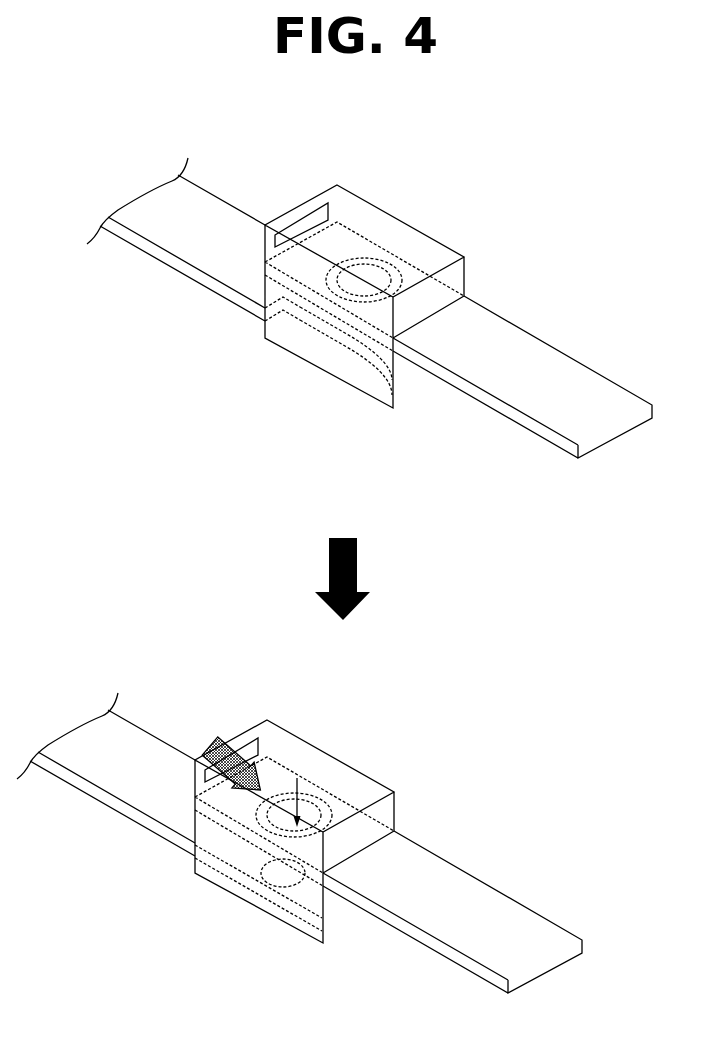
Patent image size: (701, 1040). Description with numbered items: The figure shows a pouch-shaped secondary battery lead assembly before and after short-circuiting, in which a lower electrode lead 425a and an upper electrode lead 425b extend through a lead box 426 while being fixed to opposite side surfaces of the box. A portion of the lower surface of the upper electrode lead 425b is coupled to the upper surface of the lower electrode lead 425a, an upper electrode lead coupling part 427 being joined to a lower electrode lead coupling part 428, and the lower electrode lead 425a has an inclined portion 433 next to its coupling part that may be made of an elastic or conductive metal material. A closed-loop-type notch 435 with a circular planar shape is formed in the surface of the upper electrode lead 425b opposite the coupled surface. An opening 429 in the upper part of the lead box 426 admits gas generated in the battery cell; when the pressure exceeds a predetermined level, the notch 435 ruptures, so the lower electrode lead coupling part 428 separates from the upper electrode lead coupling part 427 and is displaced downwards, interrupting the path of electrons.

The lower electrode lead 425a is at (218, 262).
The upper electrode lead 425b is at (584, 379).
The lead box 426 is at (408, 394).
The upper electrode lead coupling part 427 is at (379, 272).
The lower electrode lead coupling part 428 is at (328, 336).
The opening 429 is at (294, 214).
The inclined portion 433 is at (288, 313).
The closed-loop-type notch 435 is at (354, 264).